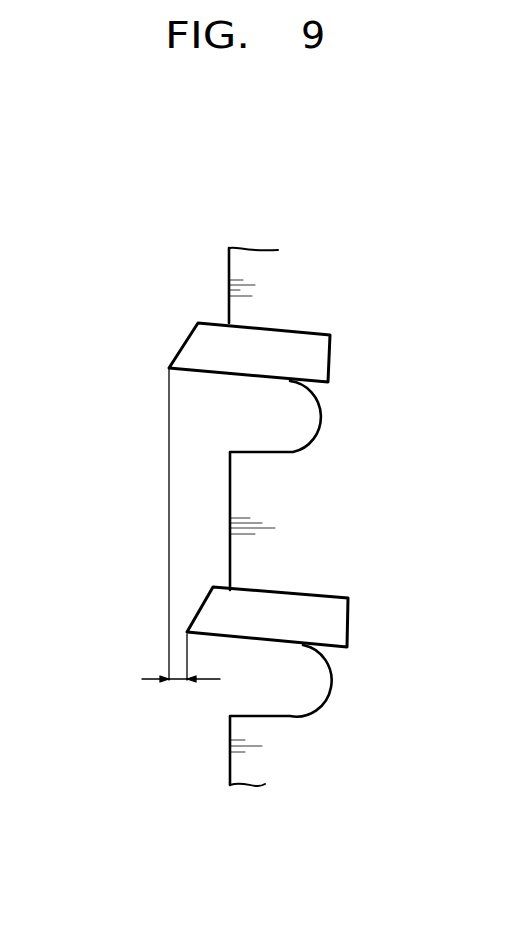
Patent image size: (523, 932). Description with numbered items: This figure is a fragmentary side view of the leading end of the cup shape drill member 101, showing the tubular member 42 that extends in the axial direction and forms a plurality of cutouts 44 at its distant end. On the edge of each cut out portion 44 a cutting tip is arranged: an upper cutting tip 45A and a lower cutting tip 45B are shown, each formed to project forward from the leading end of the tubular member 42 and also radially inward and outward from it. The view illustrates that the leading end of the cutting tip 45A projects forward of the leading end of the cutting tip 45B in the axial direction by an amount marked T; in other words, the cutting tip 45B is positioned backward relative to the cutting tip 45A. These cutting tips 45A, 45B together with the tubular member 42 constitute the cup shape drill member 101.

The cup shape drill member 101 is at (158, 254).
The tubular member 42 is at (236, 268).
The cutouts 44 is at (273, 445).
The cutting tip 45A is at (195, 352).
The cutting tip 45B is at (210, 615).